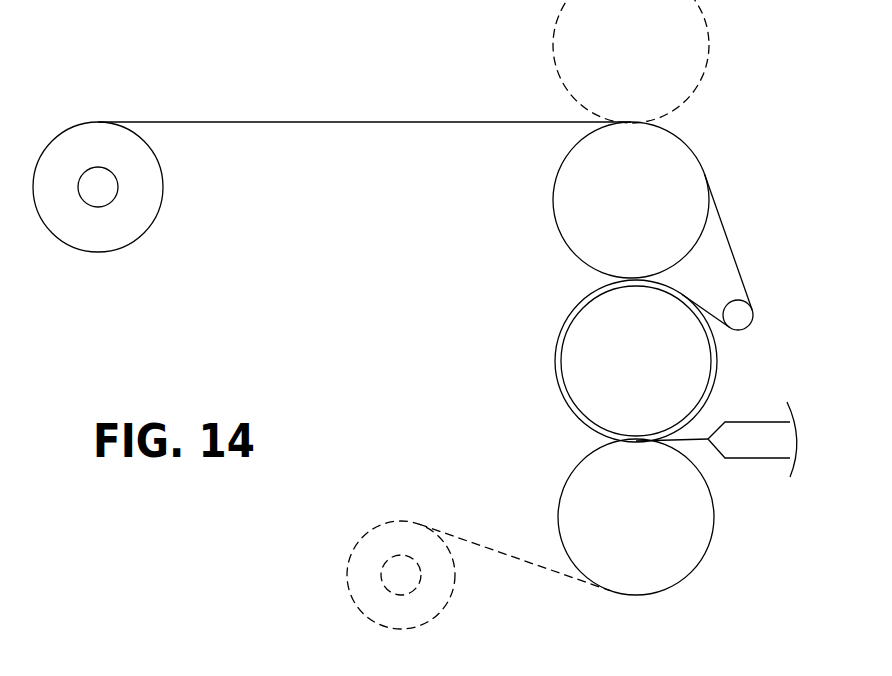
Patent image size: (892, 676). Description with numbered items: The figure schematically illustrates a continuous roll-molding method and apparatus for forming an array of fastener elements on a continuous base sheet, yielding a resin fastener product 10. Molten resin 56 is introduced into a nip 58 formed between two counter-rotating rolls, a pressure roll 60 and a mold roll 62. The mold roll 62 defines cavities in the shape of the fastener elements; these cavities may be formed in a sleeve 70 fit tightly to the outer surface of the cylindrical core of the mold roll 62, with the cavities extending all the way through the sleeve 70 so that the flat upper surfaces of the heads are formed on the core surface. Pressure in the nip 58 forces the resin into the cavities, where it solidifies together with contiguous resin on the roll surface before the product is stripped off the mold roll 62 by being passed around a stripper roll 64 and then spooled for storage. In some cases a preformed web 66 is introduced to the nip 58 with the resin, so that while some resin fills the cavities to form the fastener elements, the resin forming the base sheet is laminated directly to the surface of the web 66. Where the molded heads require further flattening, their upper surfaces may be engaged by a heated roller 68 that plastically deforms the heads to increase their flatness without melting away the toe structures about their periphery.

The fastener product 10 is at (298, 120).
The heated roller 68 is at (614, 53).
The mold roll 62 is at (586, 361).
The sleeve 70 is at (557, 334).
The stripper roll 64 is at (753, 317).
The molten resin 56 is at (705, 436).
The nip 58 is at (590, 436).
The pressure roll 60 is at (616, 528).
The preformed web 66 is at (502, 556).